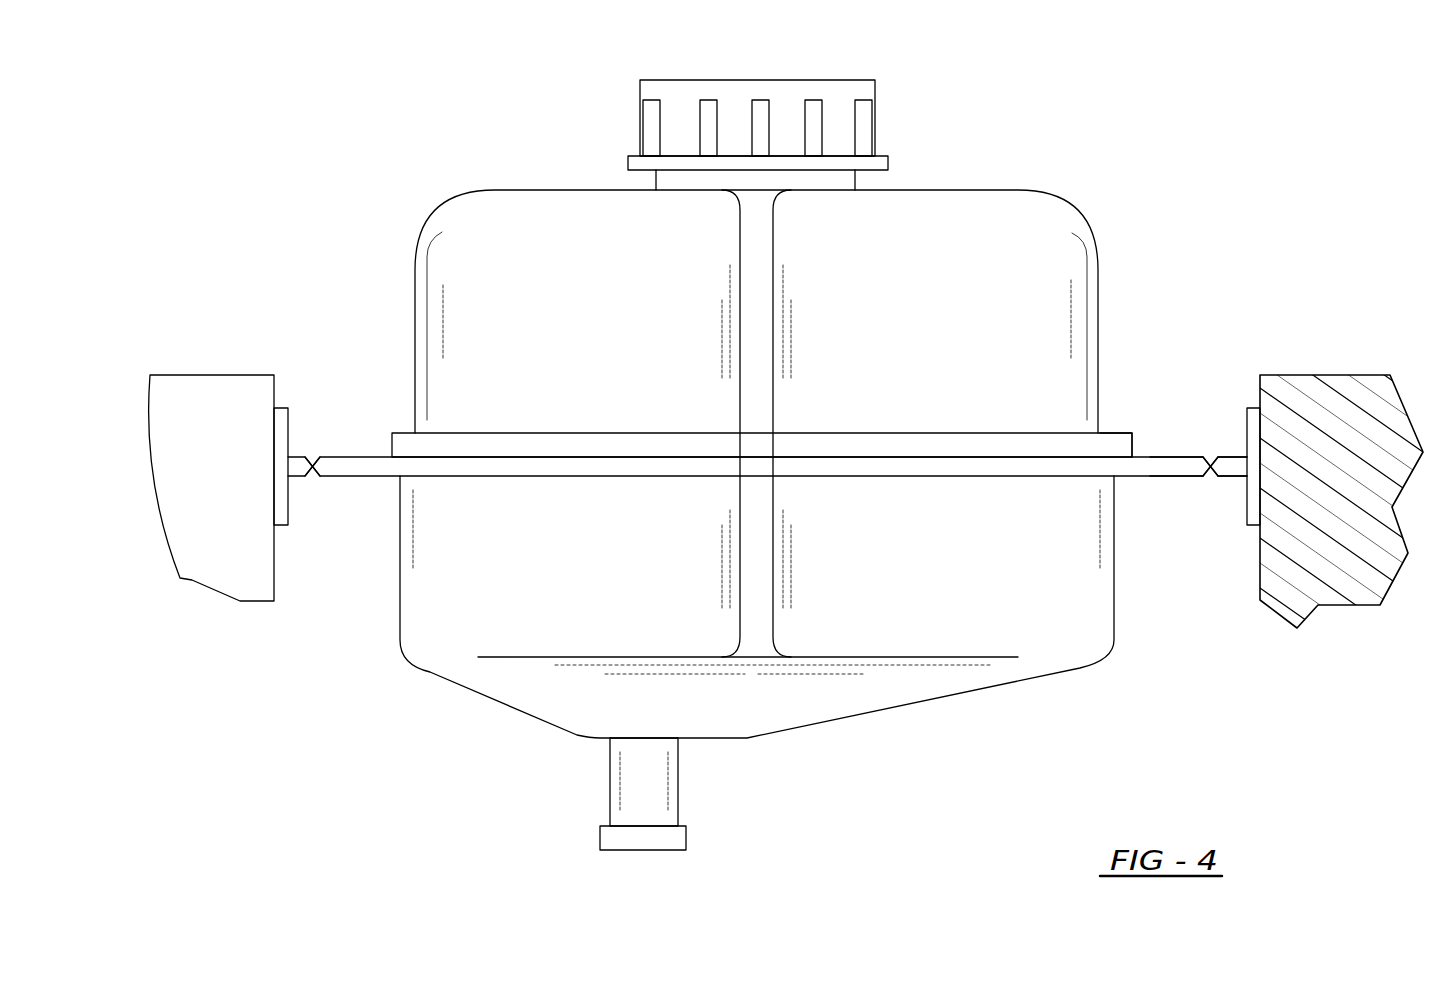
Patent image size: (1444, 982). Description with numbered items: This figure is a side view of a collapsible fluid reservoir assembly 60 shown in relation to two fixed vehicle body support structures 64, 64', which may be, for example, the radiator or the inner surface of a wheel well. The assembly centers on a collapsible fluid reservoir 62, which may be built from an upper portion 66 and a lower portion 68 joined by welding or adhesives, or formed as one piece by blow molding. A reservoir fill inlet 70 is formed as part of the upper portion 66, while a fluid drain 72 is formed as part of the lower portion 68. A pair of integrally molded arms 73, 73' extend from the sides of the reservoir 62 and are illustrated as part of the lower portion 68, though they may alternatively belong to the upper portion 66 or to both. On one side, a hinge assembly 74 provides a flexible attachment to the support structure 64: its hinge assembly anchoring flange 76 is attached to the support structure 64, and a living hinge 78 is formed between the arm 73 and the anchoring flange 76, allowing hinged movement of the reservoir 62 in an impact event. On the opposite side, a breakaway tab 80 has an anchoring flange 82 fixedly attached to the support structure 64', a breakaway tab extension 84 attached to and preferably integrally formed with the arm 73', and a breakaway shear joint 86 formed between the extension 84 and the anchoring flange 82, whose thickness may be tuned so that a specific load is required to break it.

The collapsible fluid reservoir assembly 60 is at (1160, 134).
The collapsible fluid reservoir 62 is at (1052, 242).
The fixed vehicle body support structure 64 is at (211, 526).
The fixed vehicle body support structure 64' is at (1350, 513).
The upper portion 66 is at (510, 213).
The lower portion 68 is at (530, 682).
The reservoir fill inlet 70 is at (790, 100).
The fluid drain 72 is at (648, 782).
The arm 73 is at (742, 401).
The arm 73' is at (1136, 399).
The hinge assembly 74 is at (303, 462).
The hinge assembly anchoring flange 76 is at (283, 507).
The living hinge 78 is at (313, 477).
The breakaway tab 80 is at (1228, 467).
The anchoring flange 82 is at (1250, 508).
The breakaway tab extension 84 is at (1185, 467).
The breakaway shear joint 86 is at (1218, 477).